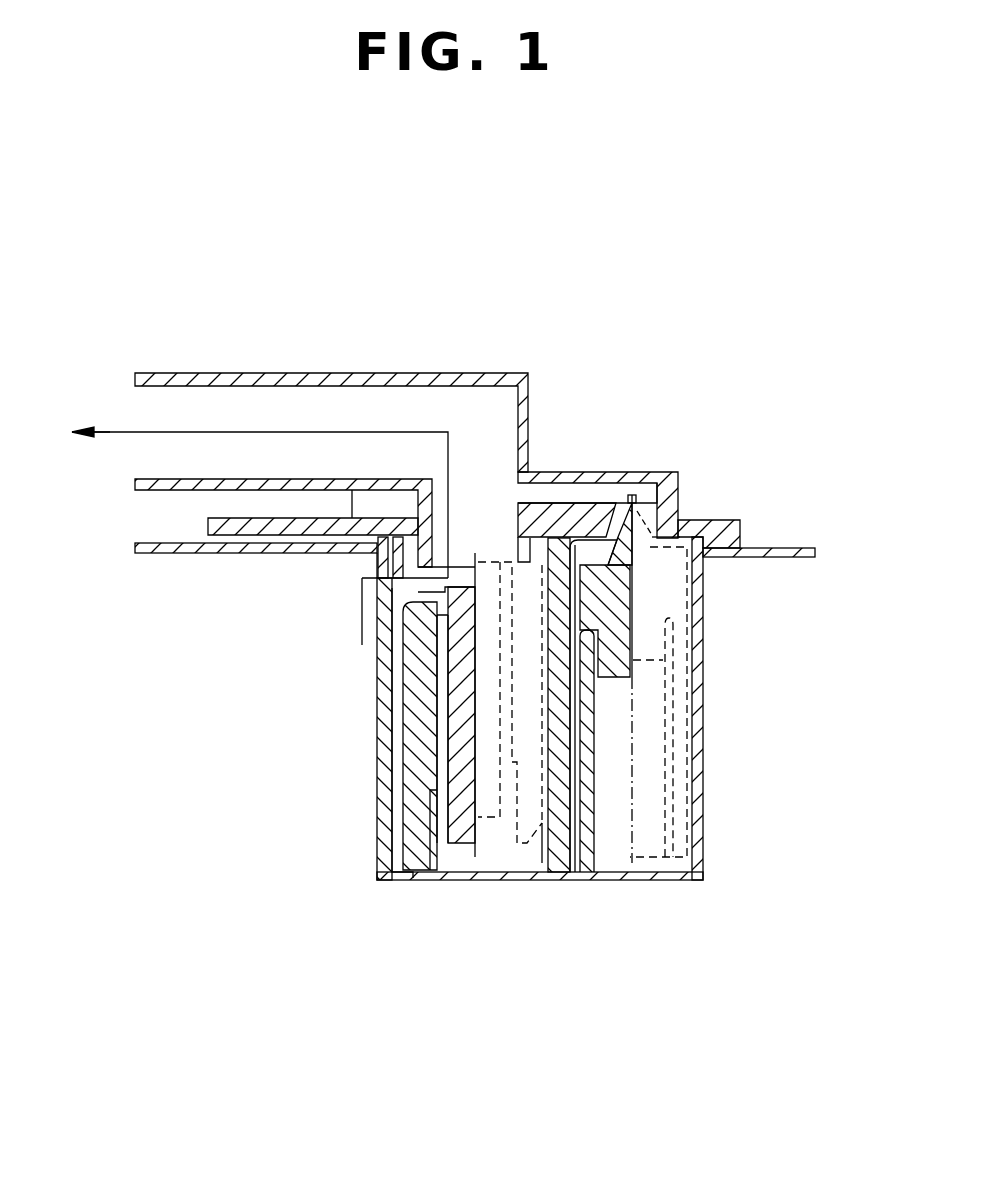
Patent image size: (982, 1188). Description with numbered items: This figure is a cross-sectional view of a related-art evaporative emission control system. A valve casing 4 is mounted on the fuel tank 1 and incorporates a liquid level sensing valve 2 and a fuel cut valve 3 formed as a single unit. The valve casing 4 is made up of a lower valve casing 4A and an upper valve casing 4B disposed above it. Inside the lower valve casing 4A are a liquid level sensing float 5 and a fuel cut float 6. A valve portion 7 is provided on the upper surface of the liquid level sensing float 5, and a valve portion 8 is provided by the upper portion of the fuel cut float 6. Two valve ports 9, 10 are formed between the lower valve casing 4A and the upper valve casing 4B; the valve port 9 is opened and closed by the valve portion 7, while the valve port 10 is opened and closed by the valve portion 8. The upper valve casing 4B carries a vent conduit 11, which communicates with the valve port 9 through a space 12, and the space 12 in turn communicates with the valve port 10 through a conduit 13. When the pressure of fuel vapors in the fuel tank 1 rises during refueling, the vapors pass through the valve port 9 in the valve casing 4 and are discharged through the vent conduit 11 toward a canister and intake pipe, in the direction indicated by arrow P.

The fuel tank 1 is at (787, 547).
The liquid level sensing valve 2 is at (400, 769).
The fuel cut valve 3 is at (688, 742).
The valve casing 4 is at (712, 587).
The lower valve casing 4A is at (388, 818).
The upper valve casing 4B is at (466, 382).
The liquid level sensing float 5 is at (422, 823).
The fuel cut float 6 is at (581, 840).
The valve portion 7 is at (438, 603).
The valve portion 8 is at (625, 578).
The valve port 9 is at (440, 560).
The valve port 10 is at (650, 533).
The vent conduit 11 is at (204, 378).
The space 12 is at (500, 503).
The conduit 13 is at (588, 497).
The arrow P is at (113, 433).